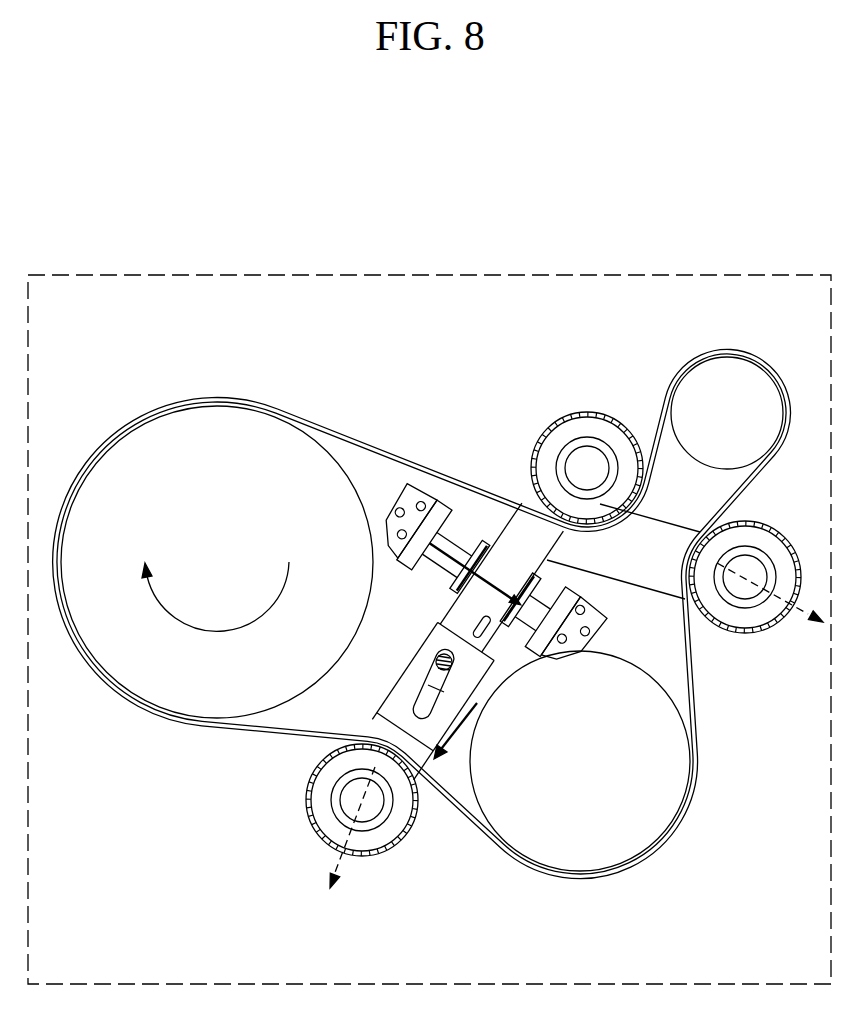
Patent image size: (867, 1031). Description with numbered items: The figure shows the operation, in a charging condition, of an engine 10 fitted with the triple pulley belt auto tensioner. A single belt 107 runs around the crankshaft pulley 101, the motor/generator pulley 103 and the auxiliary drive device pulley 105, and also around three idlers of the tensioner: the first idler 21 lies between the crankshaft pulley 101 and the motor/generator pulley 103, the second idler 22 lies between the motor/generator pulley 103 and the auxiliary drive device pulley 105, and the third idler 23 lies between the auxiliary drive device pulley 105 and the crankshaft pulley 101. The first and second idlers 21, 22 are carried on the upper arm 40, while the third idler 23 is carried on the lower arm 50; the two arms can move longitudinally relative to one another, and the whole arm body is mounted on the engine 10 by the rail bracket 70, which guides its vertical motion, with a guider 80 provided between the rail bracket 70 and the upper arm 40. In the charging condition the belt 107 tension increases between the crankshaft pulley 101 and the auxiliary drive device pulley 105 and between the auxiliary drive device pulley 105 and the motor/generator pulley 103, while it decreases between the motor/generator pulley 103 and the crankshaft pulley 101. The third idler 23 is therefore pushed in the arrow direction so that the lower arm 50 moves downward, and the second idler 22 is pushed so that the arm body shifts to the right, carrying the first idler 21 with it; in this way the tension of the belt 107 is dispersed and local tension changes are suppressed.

The engine 10 is at (467, 272).
The crankshaft pulley 101 is at (216, 418).
The motor/generator pulley 103 is at (730, 378).
The auxiliary drive device pulley 105 is at (574, 856).
The belt 107 is at (378, 452).
The first idler 21 is at (587, 410).
The second idler 22 is at (740, 640).
The third idler 23 is at (362, 858).
The upper arm 40 is at (622, 597).
The lower arm 50 is at (398, 660).
The rail bracket 70 is at (465, 528).
The guider 80 is at (513, 627).